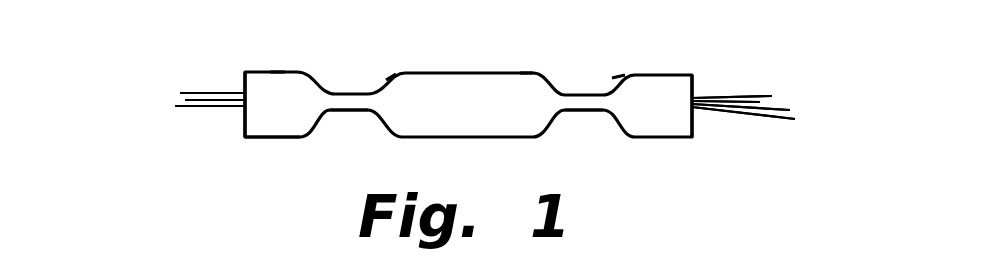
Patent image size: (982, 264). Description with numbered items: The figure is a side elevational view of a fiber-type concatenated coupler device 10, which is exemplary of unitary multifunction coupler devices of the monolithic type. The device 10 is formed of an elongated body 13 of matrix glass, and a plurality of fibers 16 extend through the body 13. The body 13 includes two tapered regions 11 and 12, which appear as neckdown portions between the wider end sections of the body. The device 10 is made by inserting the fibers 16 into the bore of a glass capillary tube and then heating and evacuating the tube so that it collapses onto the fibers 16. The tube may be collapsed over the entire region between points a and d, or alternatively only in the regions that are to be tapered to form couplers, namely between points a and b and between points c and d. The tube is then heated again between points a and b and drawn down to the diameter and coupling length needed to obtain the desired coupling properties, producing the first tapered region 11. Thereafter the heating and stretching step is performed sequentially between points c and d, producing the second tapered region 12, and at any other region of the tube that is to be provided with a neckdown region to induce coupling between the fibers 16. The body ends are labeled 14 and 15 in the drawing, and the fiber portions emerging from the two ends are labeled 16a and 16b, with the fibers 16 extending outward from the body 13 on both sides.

The device 10 is at (454, 70).
The tapered region 11 is at (352, 111).
The tapered region 12 is at (583, 111).
The elongated body 13 is at (283, 126).
The first end of tube 14 is at (244, 126).
The second end of tube 15 is at (694, 126).
The fibers 16 is at (201, 121).
The first end fiber pigtails 16a is at (212, 91).
The second end fiber pigtails 16b is at (748, 94).
The point a is at (277, 71).
The point b is at (392, 75).
The point c is at (525, 72).
The point d is at (618, 73).